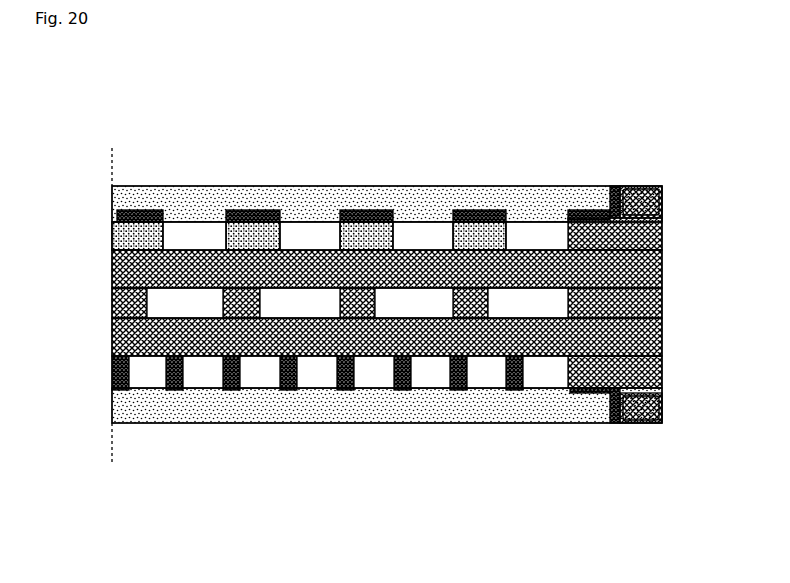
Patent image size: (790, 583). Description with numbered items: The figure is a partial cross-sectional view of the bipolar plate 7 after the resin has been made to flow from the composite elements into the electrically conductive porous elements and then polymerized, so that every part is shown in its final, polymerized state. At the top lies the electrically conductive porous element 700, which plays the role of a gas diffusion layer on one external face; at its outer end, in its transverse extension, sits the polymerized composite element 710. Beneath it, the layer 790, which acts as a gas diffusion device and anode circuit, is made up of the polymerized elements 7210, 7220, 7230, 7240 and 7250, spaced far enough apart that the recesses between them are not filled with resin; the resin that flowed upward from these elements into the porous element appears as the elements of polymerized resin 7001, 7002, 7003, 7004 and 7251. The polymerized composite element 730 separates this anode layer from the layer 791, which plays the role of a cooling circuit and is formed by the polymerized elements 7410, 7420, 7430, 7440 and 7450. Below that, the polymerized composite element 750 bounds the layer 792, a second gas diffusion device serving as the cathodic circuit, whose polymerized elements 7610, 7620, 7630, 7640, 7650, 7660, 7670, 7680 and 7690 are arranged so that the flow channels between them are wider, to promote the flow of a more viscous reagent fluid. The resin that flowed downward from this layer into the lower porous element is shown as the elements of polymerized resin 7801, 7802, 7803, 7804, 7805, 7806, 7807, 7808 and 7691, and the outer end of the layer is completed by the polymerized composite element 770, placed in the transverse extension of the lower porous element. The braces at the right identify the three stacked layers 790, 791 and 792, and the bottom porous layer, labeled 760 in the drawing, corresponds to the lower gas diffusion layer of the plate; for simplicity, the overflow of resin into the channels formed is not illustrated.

The bipolar plate 7 is at (384, 313).
The electrically conductive porous element 700 is at (335, 209).
The polymerized composite element 710 is at (655, 215).
The polymerized composite element 730 is at (335, 277).
The polymerized composite element 750 is at (335, 345).
The fourth insulating layer 760 is at (335, 413).
The polymerized composite element 770 is at (655, 420).
The layer 790 is at (424, 235).
The layer 791 is at (424, 302).
The layer 792 is at (384, 419).
The element of polymerized resin 7001 is at (133, 214).
The element of polymerized resin 7002 is at (247, 214).
The element of polymerized resin 7003 is at (358, 214).
The element of polymerized resin 7004 is at (474, 214).
The polymerized element 7210 is at (137, 236).
The polymerized element 7220 is at (253, 236).
The polymerized element 7230 is at (366, 236).
The polymerized element 7240 is at (479, 236).
The polymerized element 7250 is at (639, 247).
The element of polymerized resin 7251 is at (626, 187).
The polymerized element 7410 is at (112, 245).
The polymerized element 7420 is at (228, 250).
The polymerized element 7430 is at (342, 250).
The polymerized element 7440 is at (455, 250).
The polymerized element 7450 is at (639, 315).
The polymerized element 7610 is at (112, 402).
The polymerized element 7620 is at (174, 398).
The polymerized element 7630 is at (240, 398).
The polymerized element 7640 is at (294, 398).
The polymerized element 7650 is at (350, 398).
The polymerized element 7660 is at (405, 398).
The polymerized element 7670 is at (468, 398).
The polymerized element 7680 is at (530, 398).
The polymerized element 7690 is at (639, 383).
The element of polymerized resin 7691 is at (613, 423).
The element of polymerized resin 7801 is at (112, 442).
The element of polymerized resin 7802 is at (177, 395).
The element of polymerized resin 7803 is at (236, 398).
The element of polymerized resin 7804 is at (291, 398).
The element of polymerized resin 7805 is at (347, 398).
The element of polymerized resin 7806 is at (398, 398).
The element of polymerized resin 7807 is at (456, 400).
The element of polymerized resin 7808 is at (512, 400).